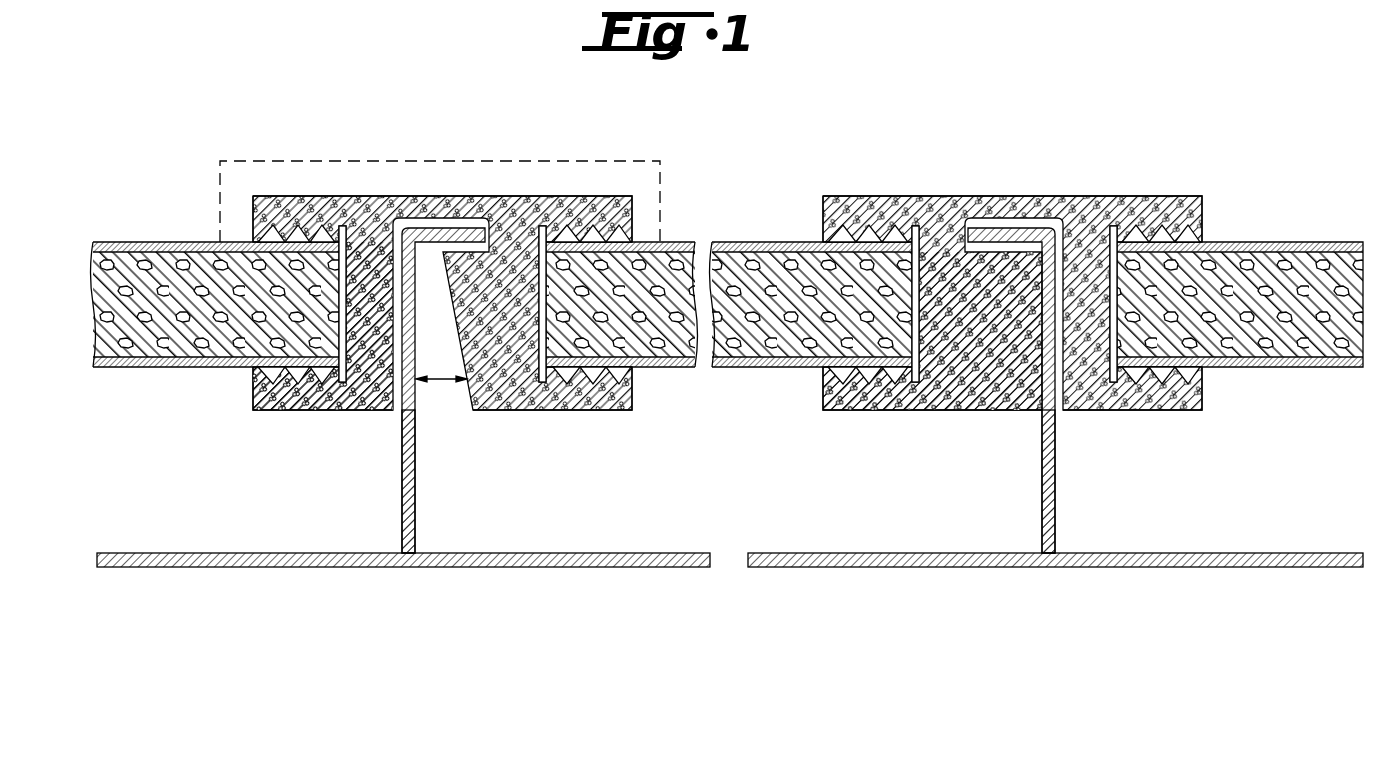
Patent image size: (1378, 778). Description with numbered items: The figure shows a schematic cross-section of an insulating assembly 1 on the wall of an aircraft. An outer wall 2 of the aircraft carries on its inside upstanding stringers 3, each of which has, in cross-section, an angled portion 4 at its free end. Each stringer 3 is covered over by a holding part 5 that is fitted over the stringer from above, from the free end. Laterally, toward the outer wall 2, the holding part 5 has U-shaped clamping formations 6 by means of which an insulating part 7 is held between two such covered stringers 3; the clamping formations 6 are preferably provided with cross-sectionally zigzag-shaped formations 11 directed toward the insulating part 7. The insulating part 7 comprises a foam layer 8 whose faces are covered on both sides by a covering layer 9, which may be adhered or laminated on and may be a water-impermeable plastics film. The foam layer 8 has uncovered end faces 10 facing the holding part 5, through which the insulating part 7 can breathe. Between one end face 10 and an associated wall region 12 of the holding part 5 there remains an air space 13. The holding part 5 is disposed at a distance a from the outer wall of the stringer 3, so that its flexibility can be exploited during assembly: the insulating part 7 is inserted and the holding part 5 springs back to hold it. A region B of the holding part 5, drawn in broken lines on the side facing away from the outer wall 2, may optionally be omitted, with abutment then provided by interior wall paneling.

The insulating assembly 1 is at (726, 334).
The outer wall 2 is at (187, 568).
The stringer 3 is at (415, 445).
The angled portion 4 is at (440, 230).
The holding part 5 is at (520, 207).
The clamping formation 6 is at (241, 224).
The insulating part 7 is at (196, 226).
The foam layer 8 is at (163, 270).
The covering layer 9 is at (127, 250).
The uncovered end face 10 is at (343, 328).
The zigzag-shaped formation 11 is at (588, 240).
The wall region 12 is at (363, 262).
The air space 13 is at (366, 402).
The distance a is at (432, 385).
The region B is at (277, 160).